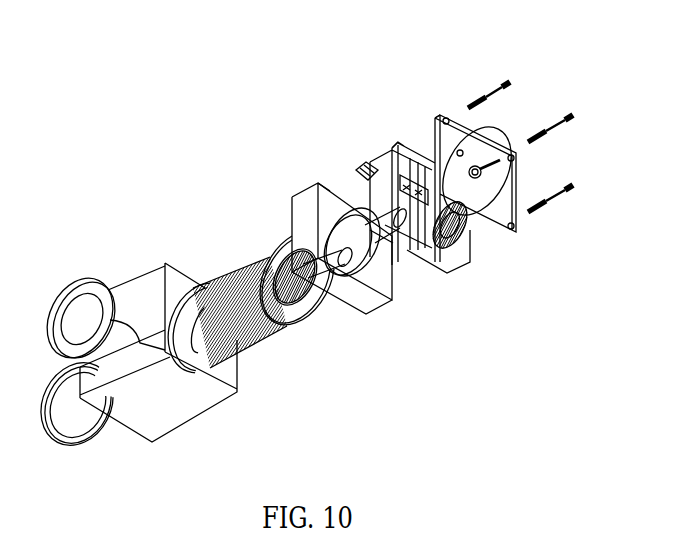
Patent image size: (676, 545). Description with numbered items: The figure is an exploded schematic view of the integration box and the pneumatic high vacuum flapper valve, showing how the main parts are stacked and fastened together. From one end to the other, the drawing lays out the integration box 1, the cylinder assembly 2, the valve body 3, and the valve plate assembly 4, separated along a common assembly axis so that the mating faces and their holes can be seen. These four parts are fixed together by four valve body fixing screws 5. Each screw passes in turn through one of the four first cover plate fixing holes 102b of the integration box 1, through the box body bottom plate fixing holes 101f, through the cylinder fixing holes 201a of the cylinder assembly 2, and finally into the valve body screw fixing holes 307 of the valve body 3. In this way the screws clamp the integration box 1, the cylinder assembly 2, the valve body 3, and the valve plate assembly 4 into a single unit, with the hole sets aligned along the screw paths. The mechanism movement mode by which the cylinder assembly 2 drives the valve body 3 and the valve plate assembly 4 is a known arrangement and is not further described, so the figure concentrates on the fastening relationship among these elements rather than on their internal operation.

The integration box 1 is at (500, 240).
The cylinder assembly 2 is at (333, 290).
The valve body 3 is at (172, 400).
The valve plate assembly 4 is at (260, 335).
The valve body fixing screws 5 is at (483, 92).
The valve body screw fixing holes 307 is at (165, 265).
The cylinder fixing holes 201a is at (335, 190).
The box body bottom plate fixing holes 101f is at (390, 143).
The first cover plate fixing holes 102b is at (435, 118).